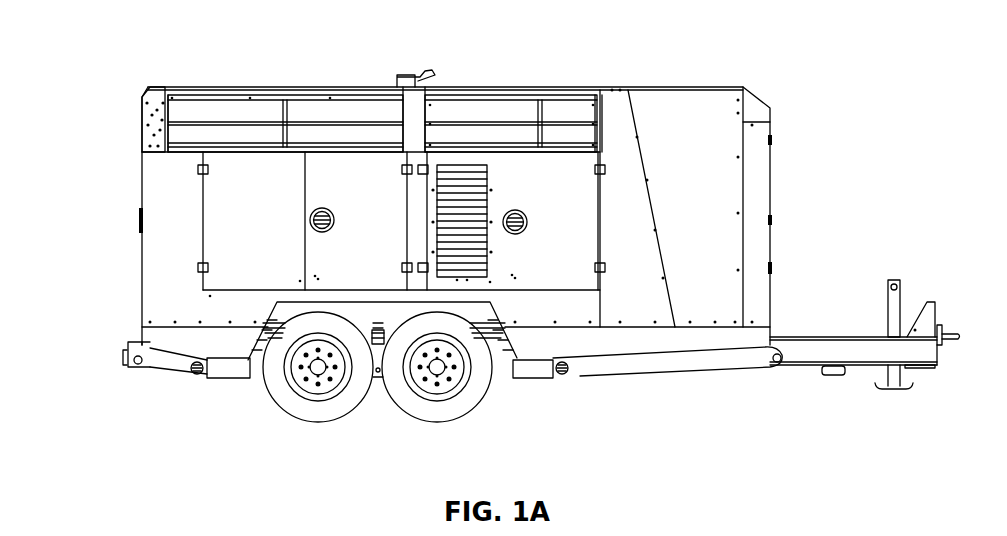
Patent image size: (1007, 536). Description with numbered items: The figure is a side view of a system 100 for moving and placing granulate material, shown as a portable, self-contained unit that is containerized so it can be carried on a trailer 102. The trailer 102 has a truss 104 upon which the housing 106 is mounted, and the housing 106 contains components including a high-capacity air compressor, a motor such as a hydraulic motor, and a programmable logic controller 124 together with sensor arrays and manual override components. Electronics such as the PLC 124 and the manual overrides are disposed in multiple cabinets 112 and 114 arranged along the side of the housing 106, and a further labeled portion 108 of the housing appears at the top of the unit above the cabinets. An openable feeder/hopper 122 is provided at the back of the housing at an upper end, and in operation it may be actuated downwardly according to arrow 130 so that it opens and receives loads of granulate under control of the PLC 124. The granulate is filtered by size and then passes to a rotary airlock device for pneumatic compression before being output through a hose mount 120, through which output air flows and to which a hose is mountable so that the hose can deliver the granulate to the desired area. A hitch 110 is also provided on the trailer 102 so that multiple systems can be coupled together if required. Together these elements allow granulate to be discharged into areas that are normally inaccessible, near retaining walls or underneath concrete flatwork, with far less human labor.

The system 100 is at (630, 46).
The trailer 102 is at (805, 350).
The truss 104 is at (577, 338).
The housing 106 is at (473, 87).
The first louvered intake panel 108 is at (228, 86).
The hitch 110 is at (132, 358).
The cabinet 112 is at (380, 210).
The cabinet 114 is at (580, 208).
The hose mount 120 is at (198, 376).
The feeder/hopper 122 is at (140, 105).
The programmable logic controller 124 is at (455, 185).
The arrow 130 is at (125, 120).